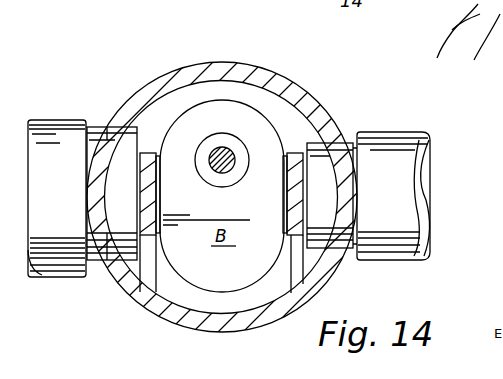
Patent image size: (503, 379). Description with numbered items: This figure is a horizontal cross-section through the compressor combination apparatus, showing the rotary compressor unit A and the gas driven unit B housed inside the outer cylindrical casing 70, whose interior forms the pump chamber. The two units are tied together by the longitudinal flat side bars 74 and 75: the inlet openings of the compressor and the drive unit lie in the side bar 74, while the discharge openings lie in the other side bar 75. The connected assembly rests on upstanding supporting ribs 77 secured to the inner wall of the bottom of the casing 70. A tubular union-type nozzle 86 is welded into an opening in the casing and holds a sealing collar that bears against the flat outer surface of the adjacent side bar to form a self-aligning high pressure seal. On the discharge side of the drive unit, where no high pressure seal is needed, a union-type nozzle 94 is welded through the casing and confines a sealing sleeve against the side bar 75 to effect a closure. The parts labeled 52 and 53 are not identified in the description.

The left roller block 52 is at (44, 120).
The right roller block 53 is at (400, 132).
The outer cylindrical casing 70 is at (268, 74).
The side bar 74 is at (155, 199).
The side bar 75 is at (287, 204).
The supporting ribs 77 is at (147, 270).
The union-type nozzle 86 is at (125, 127).
The union-type nozzle 94 is at (325, 142).